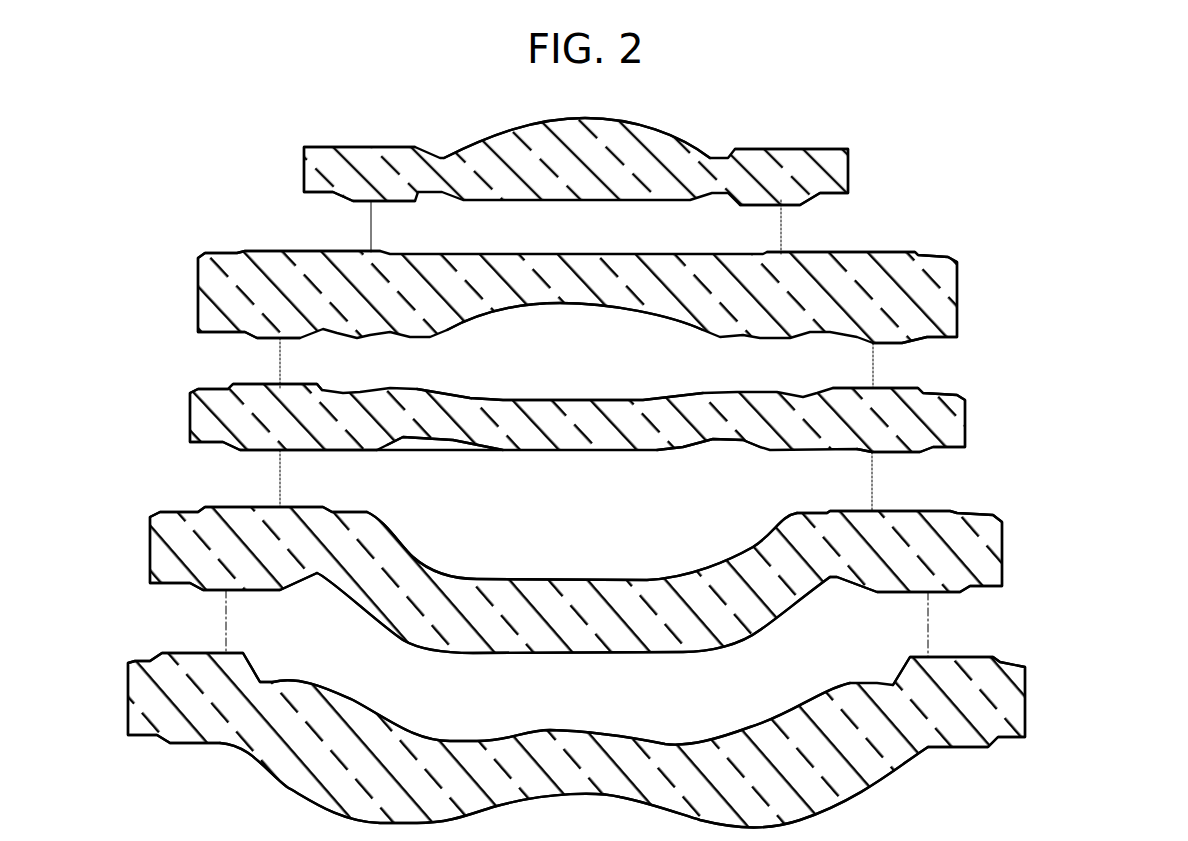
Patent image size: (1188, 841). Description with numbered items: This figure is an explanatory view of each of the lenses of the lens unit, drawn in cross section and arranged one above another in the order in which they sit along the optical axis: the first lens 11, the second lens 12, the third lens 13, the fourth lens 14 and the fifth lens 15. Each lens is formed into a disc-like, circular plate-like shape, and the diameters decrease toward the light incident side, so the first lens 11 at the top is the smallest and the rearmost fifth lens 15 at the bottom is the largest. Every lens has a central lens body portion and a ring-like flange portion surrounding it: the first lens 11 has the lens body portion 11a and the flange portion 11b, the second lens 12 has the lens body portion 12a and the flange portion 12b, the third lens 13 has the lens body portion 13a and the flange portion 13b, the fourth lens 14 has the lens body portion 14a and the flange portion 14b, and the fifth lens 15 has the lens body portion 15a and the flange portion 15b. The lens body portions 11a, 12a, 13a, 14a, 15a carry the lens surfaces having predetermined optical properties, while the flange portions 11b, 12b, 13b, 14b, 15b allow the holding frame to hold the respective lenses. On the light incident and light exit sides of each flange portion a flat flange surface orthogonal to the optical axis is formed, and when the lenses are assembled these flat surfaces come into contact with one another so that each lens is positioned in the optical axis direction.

The first lens 11 is at (863, 170).
The lens body portion 11a is at (598, 119).
The flange portion 11b is at (362, 147).
The second lens 12 is at (972, 294).
The lens body portion 12a is at (577, 306).
The flange portion 12b is at (305, 252).
The third lens 13 is at (980, 421).
The lens body portion 13a is at (572, 451).
The flange portion 13b is at (258, 384).
The fourth lens 14 is at (1018, 554).
The lens body portion 14a is at (580, 580).
The flange portion 14b is at (220, 507).
The fifth lens 15 is at (1040, 696).
The lens body portion 15a is at (577, 732).
The flange portion 15b is at (190, 653).